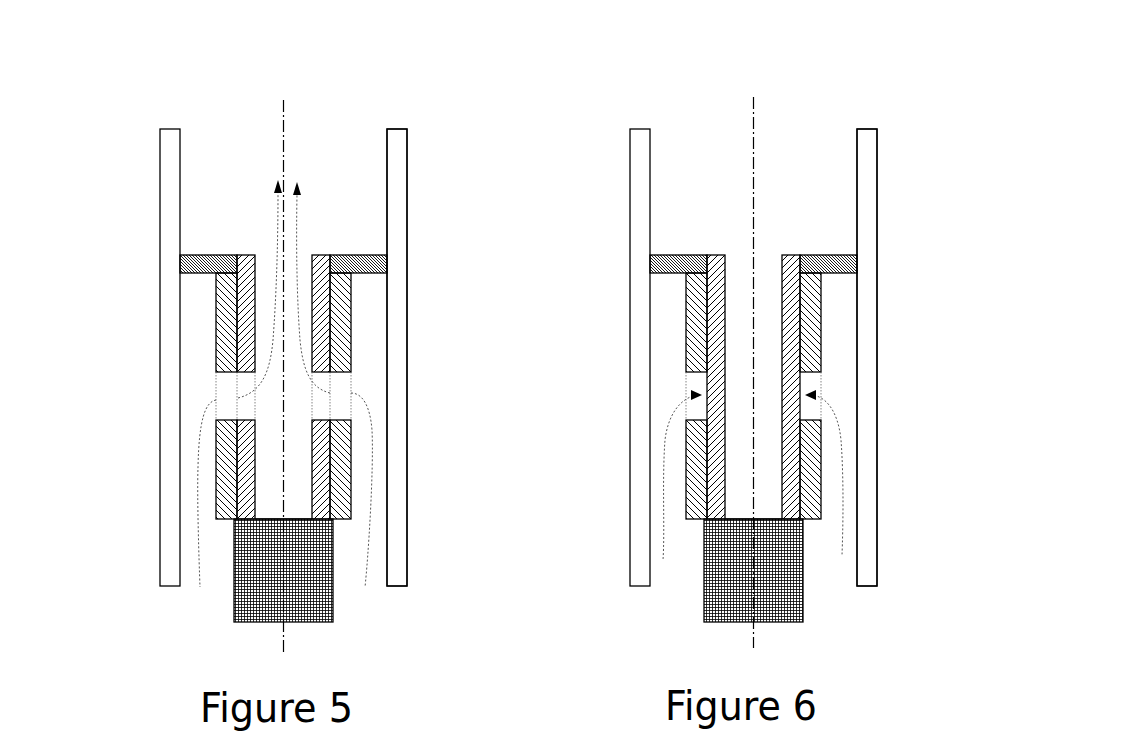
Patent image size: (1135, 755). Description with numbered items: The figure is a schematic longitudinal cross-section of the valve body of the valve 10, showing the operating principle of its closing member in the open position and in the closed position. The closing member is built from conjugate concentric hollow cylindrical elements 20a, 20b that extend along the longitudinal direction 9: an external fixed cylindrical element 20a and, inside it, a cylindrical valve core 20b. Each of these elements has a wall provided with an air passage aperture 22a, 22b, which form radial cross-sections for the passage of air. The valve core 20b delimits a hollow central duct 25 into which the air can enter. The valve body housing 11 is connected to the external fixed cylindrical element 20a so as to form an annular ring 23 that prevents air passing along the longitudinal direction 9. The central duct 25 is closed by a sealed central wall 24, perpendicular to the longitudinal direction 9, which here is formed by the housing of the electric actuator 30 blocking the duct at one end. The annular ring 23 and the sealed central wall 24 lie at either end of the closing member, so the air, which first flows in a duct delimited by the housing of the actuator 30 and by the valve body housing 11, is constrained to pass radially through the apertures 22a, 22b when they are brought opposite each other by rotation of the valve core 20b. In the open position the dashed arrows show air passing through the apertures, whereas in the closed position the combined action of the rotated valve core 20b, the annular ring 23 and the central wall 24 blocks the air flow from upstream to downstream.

In FIG. 5, the longitudinal direction 9 is at (282, 127).
In FIG. 6, the longitudinal direction 9 is at (750, 132).
In FIG. 5, the valve 10 is at (434, 137).
In FIG. 6, the valve 10 is at (882, 117).
In FIG. 5, the housing 11 is at (167, 182).
In FIG. 6, the housing 11 is at (545, 439).
In FIG. 5, the annular ring 23 is at (680, 263).
In FIG. 6, the annular ring 23 is at (753, 264).
In FIG. 5, the external fixed cylindrical element 20a is at (340, 312).
In FIG. 6, the external fixed cylindrical element 20a is at (695, 301).
In FIG. 5, the cylindrical valve core 20b is at (327, 340).
In FIG. 6, the cylindrical valve core 20b is at (718, 324).
In FIG. 5, the central duct 25 is at (278, 385).
In FIG. 5, the air passage aperture 22a is at (225, 388).
In FIG. 5, the air passage aperture 22b is at (246, 407).
In FIG. 5, the sealed central wall 24 is at (283, 519).
In FIG. 6, the sealed central wall 24 is at (754, 515).
In FIG. 5, the electric actuator 30 is at (295, 597).
In FIG. 6, the electric actuator 30 is at (740, 597).